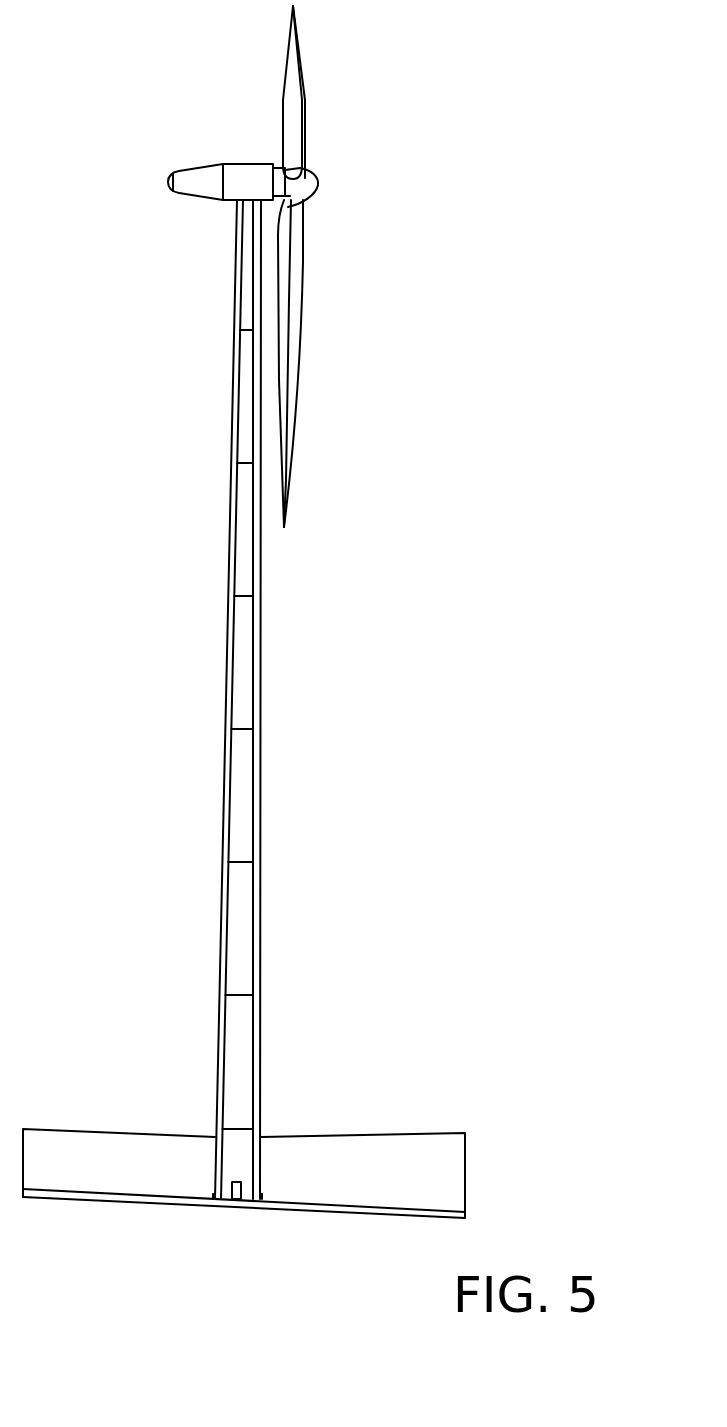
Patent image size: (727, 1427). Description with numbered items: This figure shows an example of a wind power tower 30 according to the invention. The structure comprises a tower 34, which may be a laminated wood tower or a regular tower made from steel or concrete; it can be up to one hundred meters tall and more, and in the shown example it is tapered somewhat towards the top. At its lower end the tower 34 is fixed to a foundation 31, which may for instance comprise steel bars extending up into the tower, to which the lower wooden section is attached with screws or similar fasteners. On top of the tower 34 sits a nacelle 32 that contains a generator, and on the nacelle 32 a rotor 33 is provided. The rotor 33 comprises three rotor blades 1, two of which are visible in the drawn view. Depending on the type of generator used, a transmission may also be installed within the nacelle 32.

The rotor blade 1 is at (292, 113).
The wind power tower 30 is at (390, 453).
The foundation 31 is at (272, 1224).
The nacelle 32 is at (196, 143).
The rotor 33 is at (348, 175).
The laminated wood tower 34 is at (240, 667).